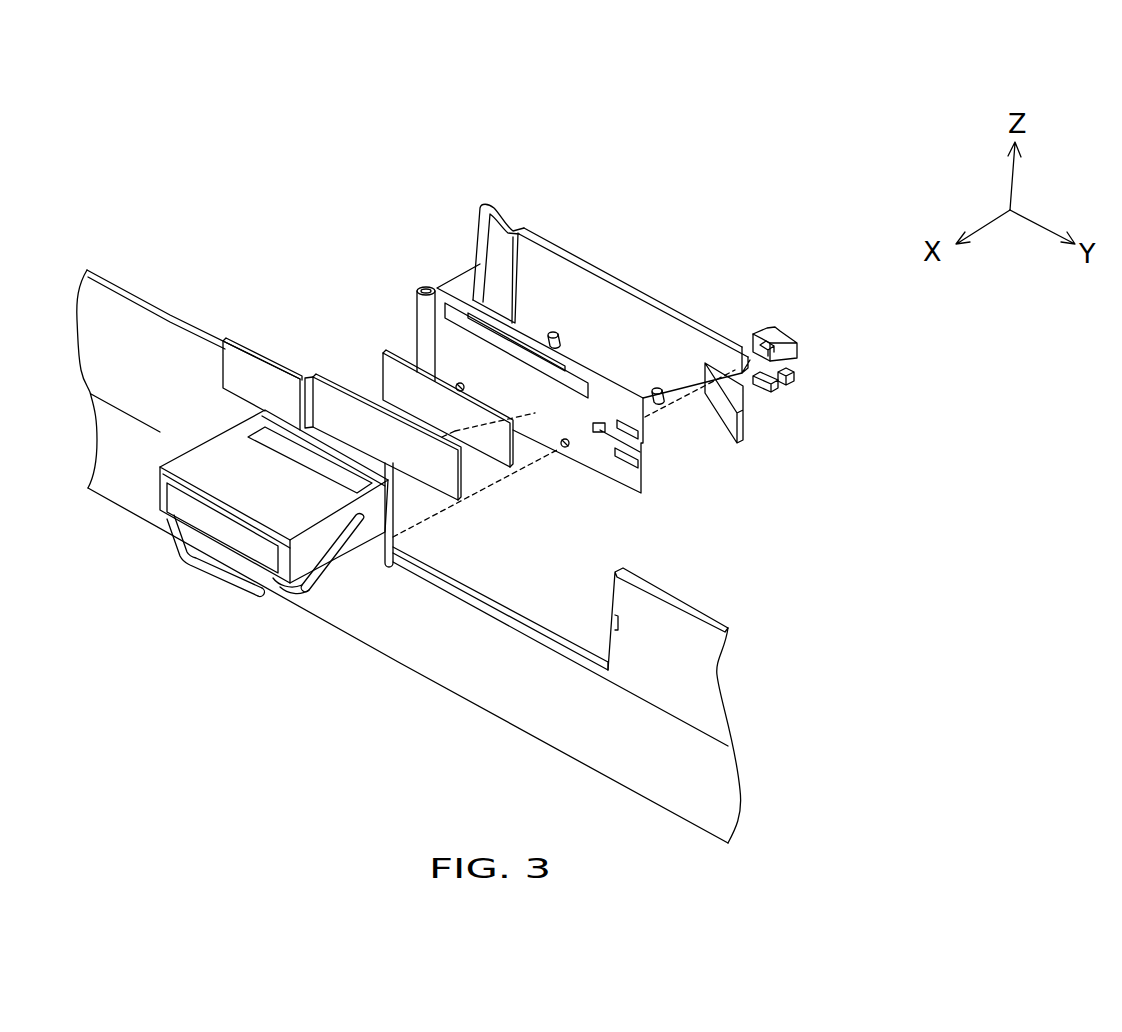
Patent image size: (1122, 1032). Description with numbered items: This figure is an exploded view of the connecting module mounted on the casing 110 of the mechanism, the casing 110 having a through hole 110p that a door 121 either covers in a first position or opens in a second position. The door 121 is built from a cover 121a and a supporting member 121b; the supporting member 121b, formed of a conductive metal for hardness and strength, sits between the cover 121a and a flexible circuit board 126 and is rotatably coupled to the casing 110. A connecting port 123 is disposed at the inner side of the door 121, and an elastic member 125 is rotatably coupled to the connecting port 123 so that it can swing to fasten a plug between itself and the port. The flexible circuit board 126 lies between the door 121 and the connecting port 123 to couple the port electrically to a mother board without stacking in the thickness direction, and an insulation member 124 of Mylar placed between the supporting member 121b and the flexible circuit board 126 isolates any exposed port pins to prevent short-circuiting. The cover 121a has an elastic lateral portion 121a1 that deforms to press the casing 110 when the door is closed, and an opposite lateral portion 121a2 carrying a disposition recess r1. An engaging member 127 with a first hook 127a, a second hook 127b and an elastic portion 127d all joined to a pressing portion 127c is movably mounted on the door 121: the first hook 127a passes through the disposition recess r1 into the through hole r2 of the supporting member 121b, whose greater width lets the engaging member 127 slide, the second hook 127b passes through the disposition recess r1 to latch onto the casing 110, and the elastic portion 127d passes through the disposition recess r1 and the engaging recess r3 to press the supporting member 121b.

The casing 110 is at (703, 608).
The through hole 110p is at (602, 575).
The door 121 is at (462, 193).
The cover 121a is at (537, 270).
The lateral portion 121a1 is at (524, 210).
The lateral portion 121a2 is at (725, 317).
The supporting member 121b is at (440, 288).
The connecting port 123 is at (305, 567).
The insulation member 124 is at (513, 468).
The elastic member 125 is at (259, 597).
The flexible circuit board 126 is at (457, 497).
The engaging member 127 is at (880, 275).
The first hook 127a is at (778, 352).
The second hook 127b is at (794, 377).
The pressing portion 127c is at (773, 336).
The elastic portion 127d is at (752, 386).
The disposition recess r1 is at (746, 398).
The through hole r2 is at (651, 431).
The engaging recess r3 is at (600, 441).